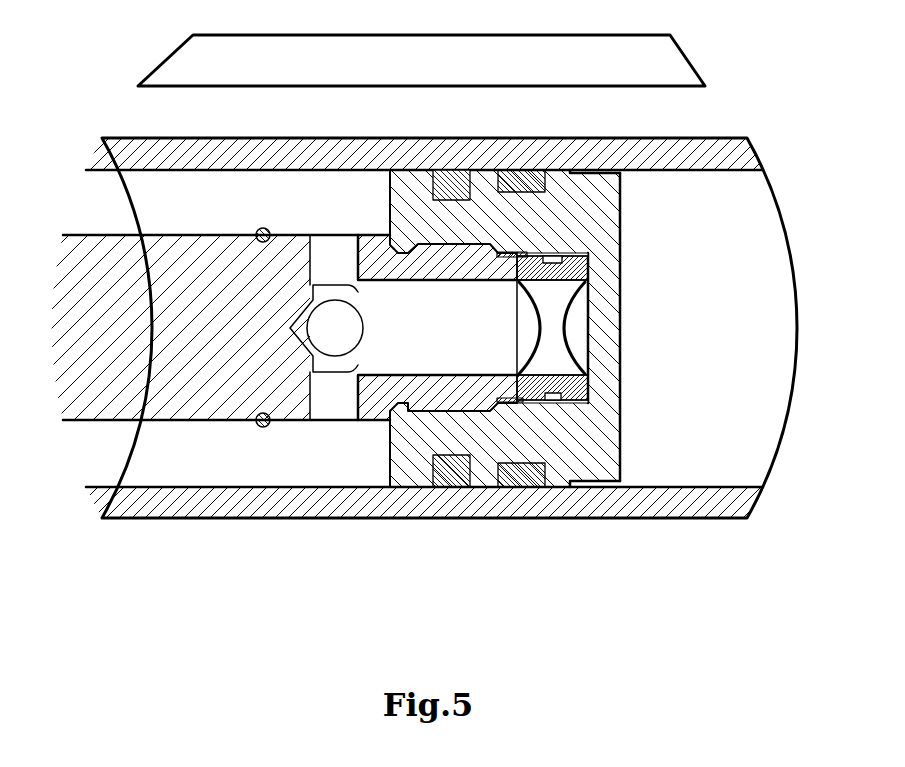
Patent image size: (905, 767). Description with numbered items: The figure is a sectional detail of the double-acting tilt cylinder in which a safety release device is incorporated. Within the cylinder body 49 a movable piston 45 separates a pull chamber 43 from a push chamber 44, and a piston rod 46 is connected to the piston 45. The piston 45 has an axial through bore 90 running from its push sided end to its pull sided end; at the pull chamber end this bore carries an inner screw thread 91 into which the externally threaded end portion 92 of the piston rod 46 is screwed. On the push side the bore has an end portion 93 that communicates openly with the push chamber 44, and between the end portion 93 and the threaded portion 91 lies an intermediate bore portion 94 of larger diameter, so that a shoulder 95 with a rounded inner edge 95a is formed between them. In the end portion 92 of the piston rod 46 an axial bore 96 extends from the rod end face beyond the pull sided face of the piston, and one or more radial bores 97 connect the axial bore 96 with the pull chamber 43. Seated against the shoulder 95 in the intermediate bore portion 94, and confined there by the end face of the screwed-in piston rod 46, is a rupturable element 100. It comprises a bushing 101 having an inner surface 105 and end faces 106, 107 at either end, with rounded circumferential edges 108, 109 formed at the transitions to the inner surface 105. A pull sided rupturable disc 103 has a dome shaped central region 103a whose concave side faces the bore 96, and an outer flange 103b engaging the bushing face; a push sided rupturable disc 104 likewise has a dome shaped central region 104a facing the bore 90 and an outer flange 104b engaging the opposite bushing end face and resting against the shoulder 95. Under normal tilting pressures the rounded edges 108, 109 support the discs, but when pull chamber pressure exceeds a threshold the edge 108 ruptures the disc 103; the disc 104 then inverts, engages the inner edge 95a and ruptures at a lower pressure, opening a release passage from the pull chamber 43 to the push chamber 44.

The pull chamber 43 is at (316, 182).
The push chamber 44 is at (757, 192).
The piston 45 is at (612, 217).
The piston rod 46 is at (238, 408).
The cylinder body 49 is at (232, 157).
The axial through bore 90 is at (605, 289).
The inner screw thread 91 is at (425, 245).
The end portion 92 is at (410, 465).
The end portion 93 is at (605, 358).
The intermediate bore portion 94 is at (588, 396).
The shoulder 95 is at (596, 266).
The inner edge 95a is at (600, 393).
The axial bore 96 is at (452, 372).
The radial bores 97 is at (326, 322).
The rupturable element 100 is at (553, 404).
The bushing 101 is at (596, 425).
The rupturable disc 103 is at (528, 352).
The dome shaped central region 103a is at (538, 320).
The outer flange 103b is at (520, 260).
The rupturable disc 104 is at (568, 290).
The dome shaped central region 104a is at (591, 327).
The outer flange 104b is at (590, 397).
The inner surface 105 is at (570, 402).
The end face 106 is at (505, 460).
The end face 107 is at (570, 248).
The circumferential edge 108 is at (538, 250).
The circumferential edge 109 is at (587, 400).